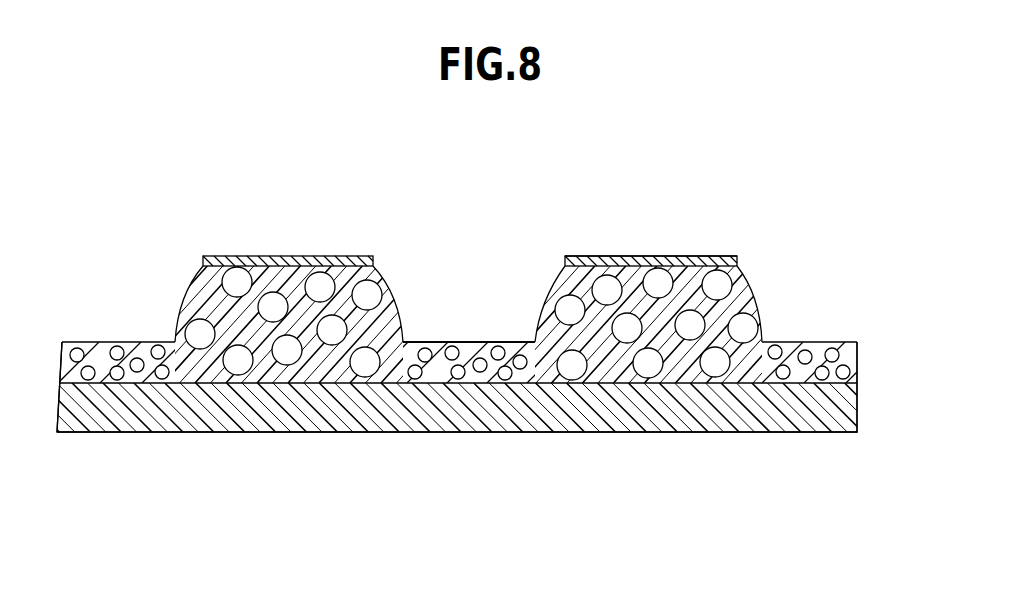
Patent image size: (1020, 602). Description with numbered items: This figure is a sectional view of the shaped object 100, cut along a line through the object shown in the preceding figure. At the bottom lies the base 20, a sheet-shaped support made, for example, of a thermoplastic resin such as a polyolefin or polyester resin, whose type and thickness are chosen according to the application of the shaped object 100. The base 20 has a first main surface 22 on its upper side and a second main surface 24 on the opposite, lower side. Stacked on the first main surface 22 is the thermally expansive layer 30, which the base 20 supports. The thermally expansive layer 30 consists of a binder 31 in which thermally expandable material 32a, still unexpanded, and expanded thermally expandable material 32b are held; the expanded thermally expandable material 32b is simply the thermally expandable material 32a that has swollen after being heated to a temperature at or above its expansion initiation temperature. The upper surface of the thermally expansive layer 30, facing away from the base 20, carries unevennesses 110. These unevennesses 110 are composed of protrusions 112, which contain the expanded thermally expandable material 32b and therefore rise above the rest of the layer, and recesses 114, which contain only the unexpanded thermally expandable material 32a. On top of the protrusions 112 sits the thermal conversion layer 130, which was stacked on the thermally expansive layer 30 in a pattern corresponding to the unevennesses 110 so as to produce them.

The shaped object 100 is at (756, 180).
The base 20 is at (857, 408).
The first main surface 22 is at (139, 392).
The second main surface 24 is at (277, 432).
The thermally expansive layer 30 is at (845, 513).
The binder 31 is at (692, 377).
The thermally expandable material 32a is at (810, 362).
The expanded thermally expandable material 32b is at (747, 342).
The unevennesses 110 is at (602, 193).
The protrusions 112 is at (578, 256).
The recesses 114 is at (507, 342).
The thermal conversion layer 130 is at (737, 262).